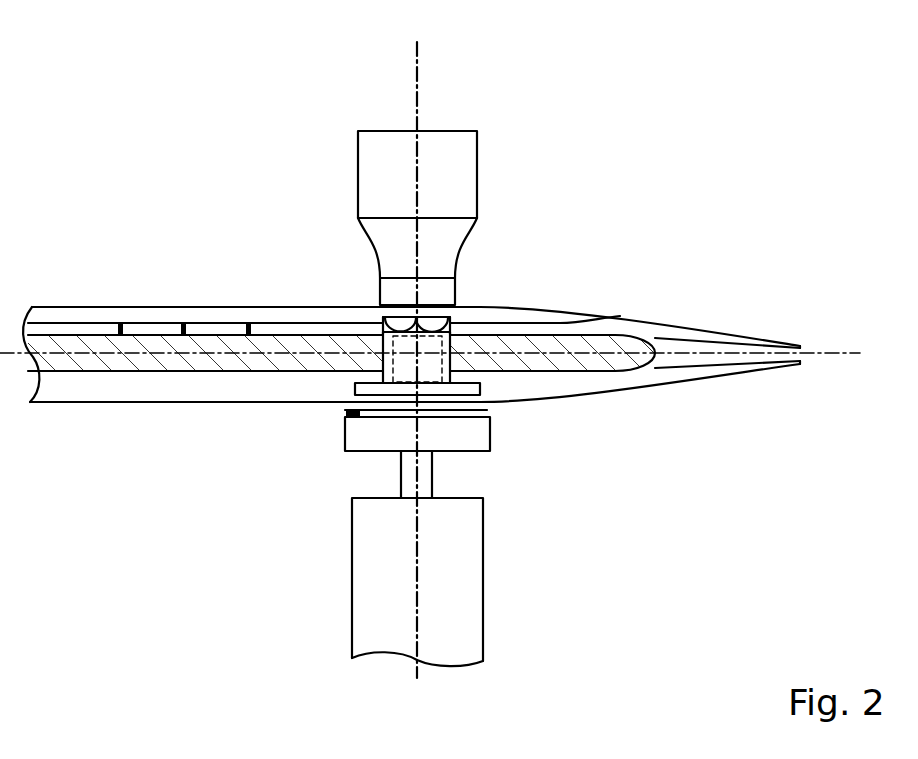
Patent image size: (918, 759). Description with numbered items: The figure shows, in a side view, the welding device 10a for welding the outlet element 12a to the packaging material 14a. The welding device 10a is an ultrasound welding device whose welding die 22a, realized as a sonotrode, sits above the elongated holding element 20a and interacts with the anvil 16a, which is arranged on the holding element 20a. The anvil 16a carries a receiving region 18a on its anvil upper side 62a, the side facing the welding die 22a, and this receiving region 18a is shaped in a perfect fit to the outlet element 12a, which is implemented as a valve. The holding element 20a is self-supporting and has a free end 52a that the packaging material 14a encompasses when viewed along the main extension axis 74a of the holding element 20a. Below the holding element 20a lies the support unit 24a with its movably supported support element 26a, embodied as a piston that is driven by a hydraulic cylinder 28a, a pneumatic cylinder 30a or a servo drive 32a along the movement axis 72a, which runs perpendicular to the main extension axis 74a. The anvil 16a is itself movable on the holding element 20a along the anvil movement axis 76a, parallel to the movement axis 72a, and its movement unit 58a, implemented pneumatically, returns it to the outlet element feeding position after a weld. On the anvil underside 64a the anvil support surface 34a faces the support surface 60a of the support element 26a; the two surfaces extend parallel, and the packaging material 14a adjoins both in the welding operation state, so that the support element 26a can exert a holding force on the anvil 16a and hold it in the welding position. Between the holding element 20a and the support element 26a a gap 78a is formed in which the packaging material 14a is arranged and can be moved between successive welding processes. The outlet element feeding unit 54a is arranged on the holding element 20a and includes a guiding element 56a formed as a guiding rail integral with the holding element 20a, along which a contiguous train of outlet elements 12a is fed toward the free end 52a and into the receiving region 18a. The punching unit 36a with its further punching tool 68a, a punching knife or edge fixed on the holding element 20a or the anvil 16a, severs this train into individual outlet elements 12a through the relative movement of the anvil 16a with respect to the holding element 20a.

The welding device 10a is at (114, 199).
The outlet element 12a is at (455, 328).
The packaging material 14a is at (628, 318).
The anvil 16a is at (382, 362).
The receiving region 18a is at (373, 318).
The holding element 20a is at (92, 364).
The welding die 22a is at (448, 170).
The support unit 24a is at (375, 535).
The support element 26a is at (470, 430).
The hydraulic cylinder 28a is at (264, 582).
The pneumatic cylinder 30a is at (264, 582).
The servo drive 32a is at (375, 597).
The anvil support surface 34a is at (347, 416).
The punching unit 36a is at (280, 221).
The free end 52a is at (590, 348).
The outlet element feeding unit 54a is at (208, 298).
The guiding element 56a is at (92, 323).
The movement unit 58a is at (352, 380).
The support surface 60a is at (403, 393).
The anvil upper side 62a is at (431, 324).
The anvil underside 64a is at (430, 404).
The further punching tool 68a is at (235, 314).
The movement axis 72a is at (307, 356).
The main extension axis 74a is at (820, 357).
The anvil movement axis 76a is at (413, 78).
The gap 78a is at (502, 409).